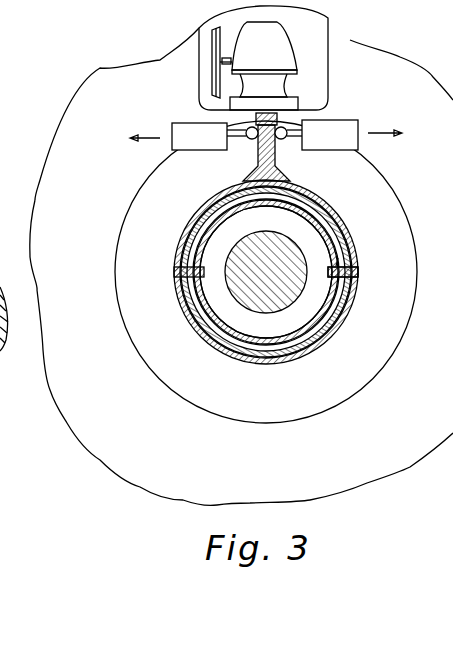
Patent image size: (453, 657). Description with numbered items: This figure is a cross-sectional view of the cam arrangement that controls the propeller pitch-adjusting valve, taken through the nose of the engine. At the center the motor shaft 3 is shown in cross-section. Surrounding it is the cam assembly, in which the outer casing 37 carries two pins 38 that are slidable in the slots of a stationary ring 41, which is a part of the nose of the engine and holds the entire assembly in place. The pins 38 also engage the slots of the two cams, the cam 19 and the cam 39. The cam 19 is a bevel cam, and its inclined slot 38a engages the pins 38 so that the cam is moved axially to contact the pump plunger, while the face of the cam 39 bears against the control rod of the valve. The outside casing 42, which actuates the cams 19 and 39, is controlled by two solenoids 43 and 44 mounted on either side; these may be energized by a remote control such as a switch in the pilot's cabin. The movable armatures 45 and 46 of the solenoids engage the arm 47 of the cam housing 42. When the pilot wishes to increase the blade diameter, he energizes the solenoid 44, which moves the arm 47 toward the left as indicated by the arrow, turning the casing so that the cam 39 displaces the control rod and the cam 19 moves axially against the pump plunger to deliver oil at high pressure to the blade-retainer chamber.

The motor shaft 3 is at (342, 224).
The cam 19 is at (238, 333).
The outer casing 37 is at (352, 262).
The pins 38 is at (358, 275).
The inclined slot 38a is at (358, 268).
The cam 39 is at (203, 296).
The stationary ring 41 is at (270, 342).
The outside casing 42 is at (333, 328).
The solenoid 43 is at (330, 135).
The solenoid 44 is at (199, 136).
The movable armature 45 is at (283, 140).
The movable armature 46 is at (249, 140).
The arm 47 is at (284, 176).